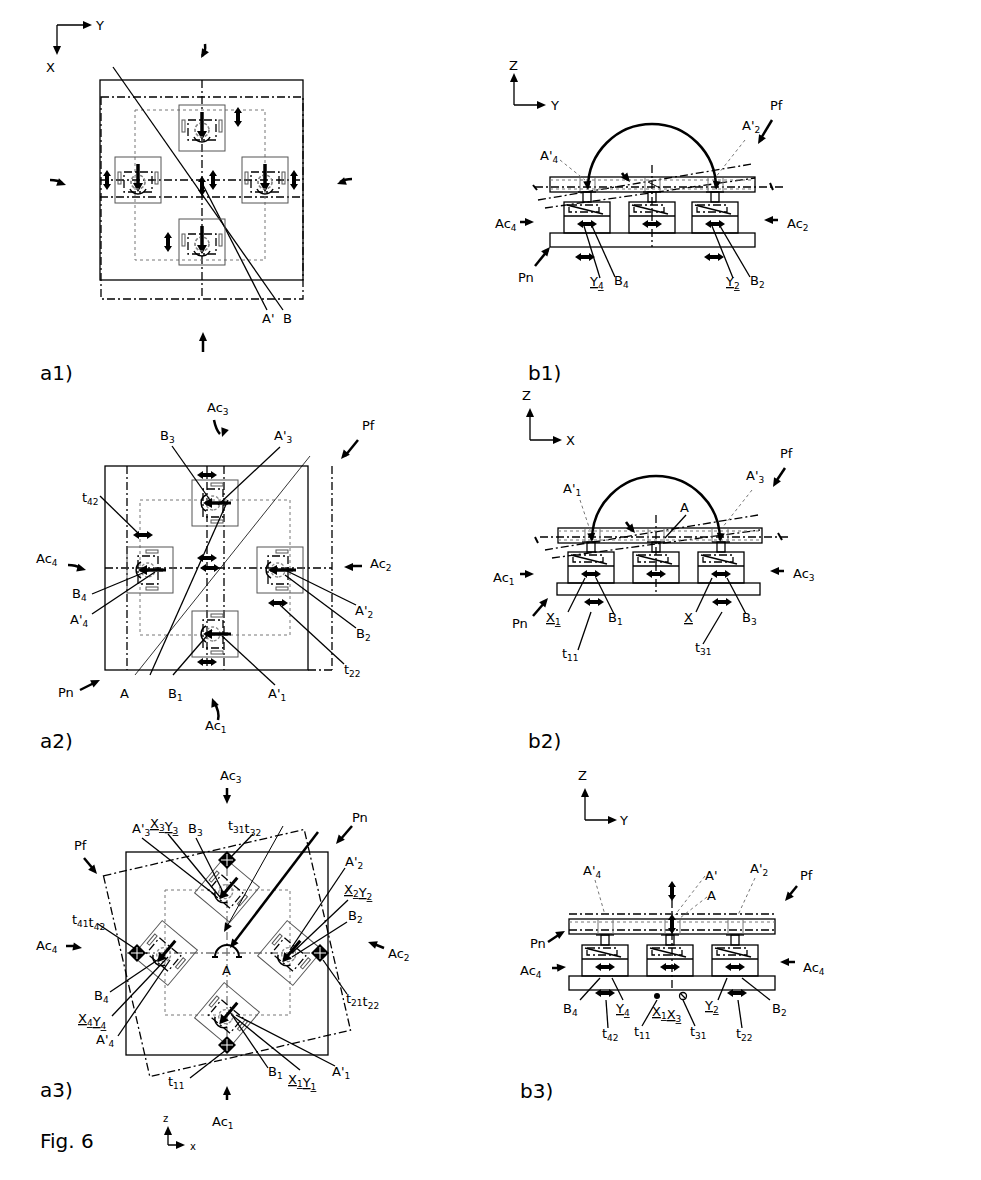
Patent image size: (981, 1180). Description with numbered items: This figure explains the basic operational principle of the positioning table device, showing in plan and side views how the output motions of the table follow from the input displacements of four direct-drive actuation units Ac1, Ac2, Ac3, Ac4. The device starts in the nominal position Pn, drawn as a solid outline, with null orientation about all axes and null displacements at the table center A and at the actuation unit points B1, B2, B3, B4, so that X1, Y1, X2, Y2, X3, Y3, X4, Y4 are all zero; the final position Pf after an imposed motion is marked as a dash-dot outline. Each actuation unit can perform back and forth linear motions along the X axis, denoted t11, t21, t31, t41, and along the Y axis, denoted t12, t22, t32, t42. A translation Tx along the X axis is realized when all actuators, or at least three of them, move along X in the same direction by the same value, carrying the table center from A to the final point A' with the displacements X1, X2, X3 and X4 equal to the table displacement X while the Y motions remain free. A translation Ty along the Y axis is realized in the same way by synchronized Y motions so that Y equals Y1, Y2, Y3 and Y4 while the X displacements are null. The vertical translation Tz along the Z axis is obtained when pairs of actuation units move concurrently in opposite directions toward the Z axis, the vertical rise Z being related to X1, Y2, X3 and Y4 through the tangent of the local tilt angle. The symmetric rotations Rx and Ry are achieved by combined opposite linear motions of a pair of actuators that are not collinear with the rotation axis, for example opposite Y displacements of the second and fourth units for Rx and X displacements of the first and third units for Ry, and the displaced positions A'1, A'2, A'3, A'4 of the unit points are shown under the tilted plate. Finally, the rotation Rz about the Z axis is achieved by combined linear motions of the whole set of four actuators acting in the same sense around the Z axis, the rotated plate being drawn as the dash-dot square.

The X axis X is at (195, 181).
The Y axis Y is at (227, 556).
The Z axis Z is at (665, 915).
The actuation unit Ac1 is at (203, 351).
The actuation unit Ac2 is at (357, 180).
The actuation unit Ac3 is at (207, 42).
The actuation unit Ac4 is at (43, 180).
The nominal position Pn is at (306, 72).
The final position Pf is at (98, 306).
The translational motion along X axis Tx is at (215, 178).
The translational motion along Y axis Ty is at (205, 566).
The vertical translational motion Tz is at (668, 884).
The rotation around X axis Rx is at (652, 149).
The rotation around Y axis Ry is at (656, 501).
The rotation around Z axis Rz is at (273, 883).
The table center A is at (665, 169).
The final position of table center A' is at (186, 600).
The displaced attachment point 1 A'1 is at (210, 282).
The displaced attachment point 2 A'2 is at (302, 229).
The displaced attachment point 3 A'3 is at (173, 90).
The displaced attachment point 4 A'4 is at (110, 213).
The actuation unit point B1 is at (205, 258).
The actuation unit point B2 is at (267, 180).
The actuation unit point B3 is at (203, 128).
The actuation unit point B4 is at (140, 178).
The X displacement of first actuation unit X1 is at (200, 262).
The X displacement of second actuation unit X2 is at (265, 185).
The X displacement of third actuation unit X3 is at (206, 125).
The X displacement of fourth actuation unit X4 is at (140, 178).
The Y displacement of first actuation unit Y1 is at (218, 636).
The Y displacement of second actuation unit Y2 is at (280, 572).
The Y displacement of third actuation unit Y3 is at (215, 505).
The Y displacement of fourth actuation unit Y4 is at (150, 568).
The translational motion of first actuator along X axis t11 is at (168, 246).
The translational motion of first actuator along Y axis t12 is at (206, 677).
The translational motion of second actuator along X axis t21 is at (299, 182).
The translational motion of second actuator along Y axis t22 is at (715, 255).
The translational motion of third actuator along X axis t31 is at (240, 118).
The translational motion of third actuator along Y axis t32 is at (207, 470).
The translational motion of fourth actuator along X axis t41 is at (102, 178).
The translational motion of fourth actuator along Y axis t42 is at (585, 255).